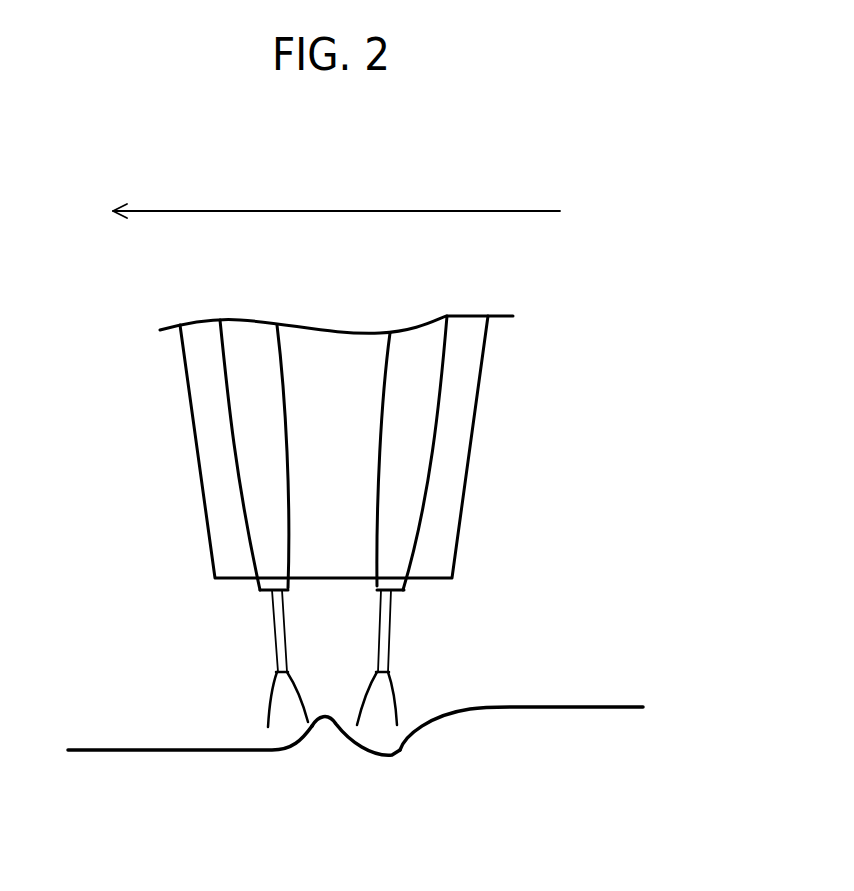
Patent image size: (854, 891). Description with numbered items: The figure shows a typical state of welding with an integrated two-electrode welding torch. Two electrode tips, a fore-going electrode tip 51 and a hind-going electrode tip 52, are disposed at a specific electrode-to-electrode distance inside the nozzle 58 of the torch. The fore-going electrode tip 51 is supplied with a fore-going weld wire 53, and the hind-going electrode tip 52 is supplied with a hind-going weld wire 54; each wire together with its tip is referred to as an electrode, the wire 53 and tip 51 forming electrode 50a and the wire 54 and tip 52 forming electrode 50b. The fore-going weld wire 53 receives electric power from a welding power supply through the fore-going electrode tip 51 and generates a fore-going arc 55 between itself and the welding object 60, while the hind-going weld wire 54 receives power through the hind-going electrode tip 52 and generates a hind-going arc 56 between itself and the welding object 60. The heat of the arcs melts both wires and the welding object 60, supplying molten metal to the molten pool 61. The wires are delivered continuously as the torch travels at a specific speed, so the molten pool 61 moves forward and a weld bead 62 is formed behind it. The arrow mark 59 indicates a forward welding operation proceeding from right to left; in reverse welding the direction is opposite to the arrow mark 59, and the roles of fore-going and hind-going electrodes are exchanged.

The electrode 50a is at (270, 560).
The electrode 50b is at (400, 550).
The fore-going electrode tip 51 is at (220, 360).
The hind-going electrode tip 52 is at (445, 368).
The fore-going weld wire 53 is at (272, 625).
The hind-going weld wire 54 is at (420, 630).
The fore-going arc 55 is at (268, 707).
The hind-going arc 56 is at (398, 702).
The nozzle 58 is at (477, 420).
The arrow mark 59 is at (322, 211).
The welding object 60 is at (137, 767).
The molten pool 61 is at (332, 752).
The weld bead 62 is at (647, 737).